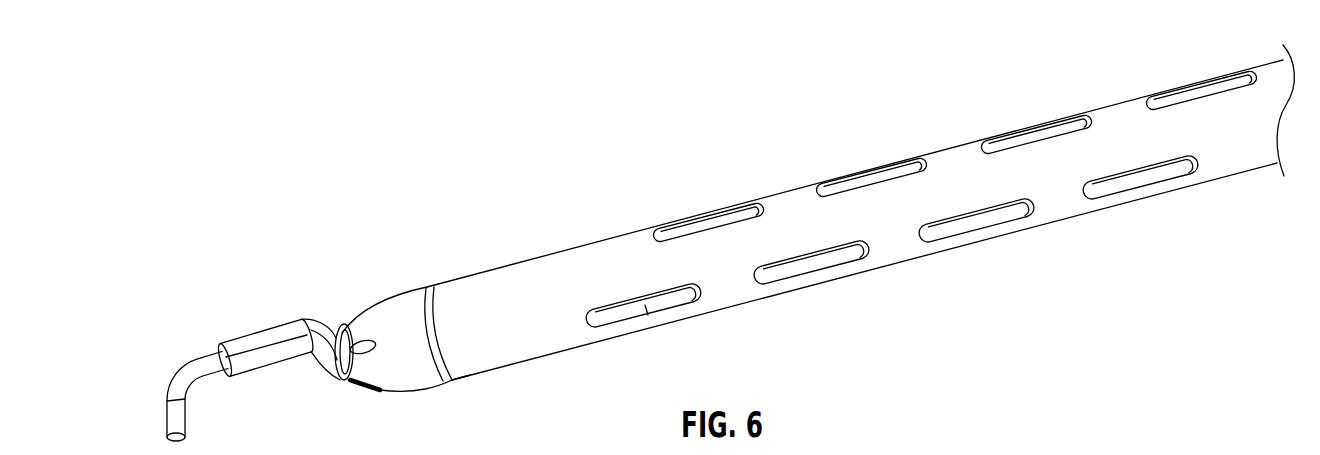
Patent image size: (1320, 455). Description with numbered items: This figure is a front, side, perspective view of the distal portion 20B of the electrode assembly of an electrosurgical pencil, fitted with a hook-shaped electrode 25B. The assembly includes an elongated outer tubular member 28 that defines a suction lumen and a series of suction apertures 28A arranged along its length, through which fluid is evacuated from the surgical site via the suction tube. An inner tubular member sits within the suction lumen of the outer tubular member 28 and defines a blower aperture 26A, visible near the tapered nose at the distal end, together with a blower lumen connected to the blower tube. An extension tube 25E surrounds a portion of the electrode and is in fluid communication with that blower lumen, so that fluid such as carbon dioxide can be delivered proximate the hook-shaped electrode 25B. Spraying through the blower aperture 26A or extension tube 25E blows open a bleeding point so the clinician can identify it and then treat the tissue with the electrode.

The outer tubular member 28 is at (961, 144).
The suction aperture 28A is at (864, 178).
The distal portion 20B is at (622, 337).
The extension tube 25E is at (262, 333).
The hook-shaped electrode 25B is at (166, 404).
The blower aperture 26A is at (364, 346).